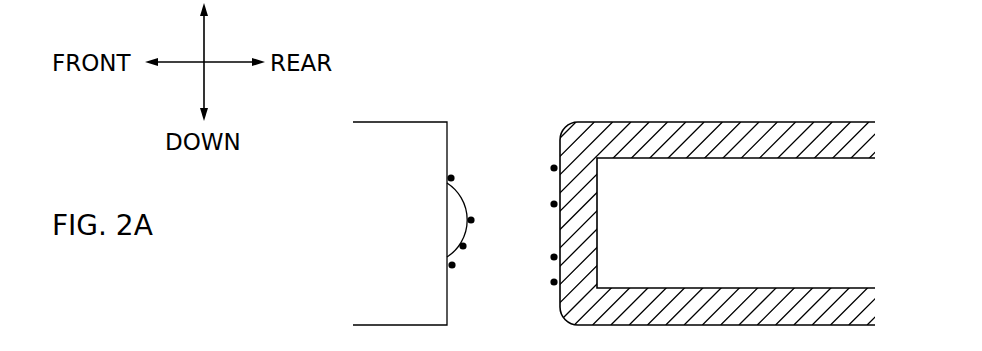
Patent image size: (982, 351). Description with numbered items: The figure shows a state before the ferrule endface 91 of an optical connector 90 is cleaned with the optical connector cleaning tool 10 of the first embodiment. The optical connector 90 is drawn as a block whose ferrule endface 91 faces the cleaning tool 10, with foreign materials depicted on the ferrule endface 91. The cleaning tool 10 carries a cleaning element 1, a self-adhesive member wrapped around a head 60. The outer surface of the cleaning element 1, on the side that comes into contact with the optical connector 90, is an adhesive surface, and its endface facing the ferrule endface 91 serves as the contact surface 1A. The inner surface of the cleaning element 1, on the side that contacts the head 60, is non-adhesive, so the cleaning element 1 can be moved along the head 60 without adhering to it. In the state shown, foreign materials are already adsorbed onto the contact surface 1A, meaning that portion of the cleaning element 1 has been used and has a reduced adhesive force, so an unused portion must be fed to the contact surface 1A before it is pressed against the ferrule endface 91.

The optical connector 90 is at (390, 96).
The ferrule endface 91 is at (448, 141).
The optical connector cleaning tool 10 is at (677, 173).
The cleaning element 1 is at (648, 132).
The contact surface 1A is at (557, 142).
The head 60 is at (805, 176).